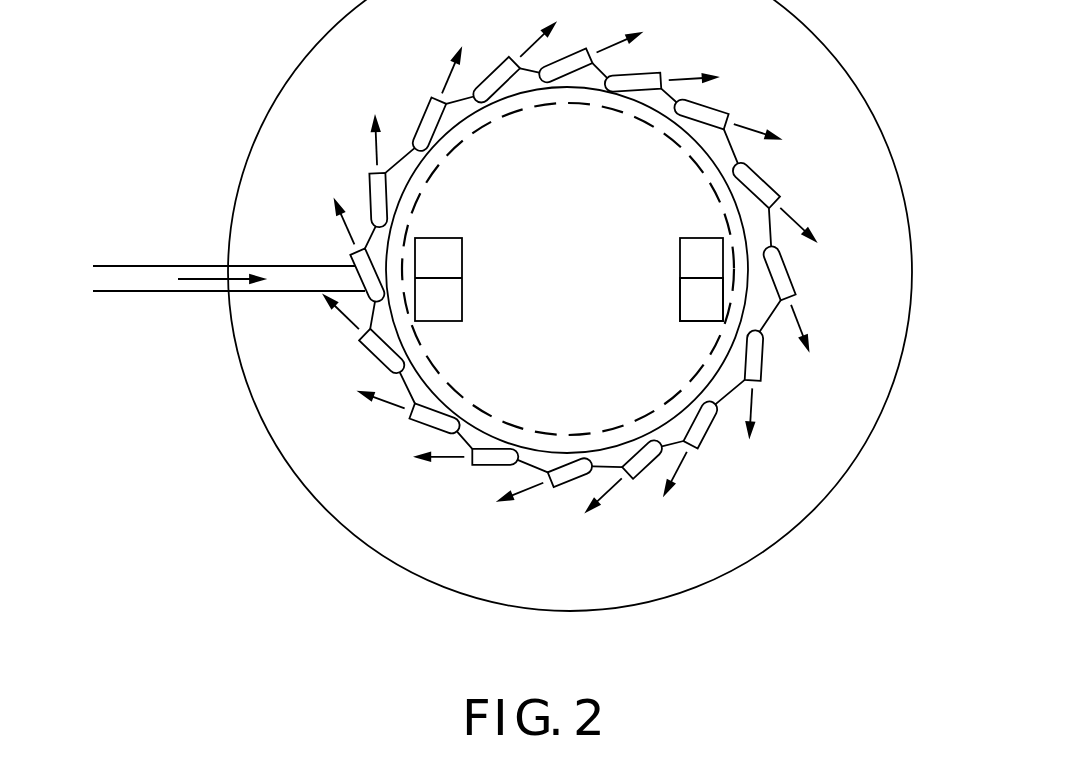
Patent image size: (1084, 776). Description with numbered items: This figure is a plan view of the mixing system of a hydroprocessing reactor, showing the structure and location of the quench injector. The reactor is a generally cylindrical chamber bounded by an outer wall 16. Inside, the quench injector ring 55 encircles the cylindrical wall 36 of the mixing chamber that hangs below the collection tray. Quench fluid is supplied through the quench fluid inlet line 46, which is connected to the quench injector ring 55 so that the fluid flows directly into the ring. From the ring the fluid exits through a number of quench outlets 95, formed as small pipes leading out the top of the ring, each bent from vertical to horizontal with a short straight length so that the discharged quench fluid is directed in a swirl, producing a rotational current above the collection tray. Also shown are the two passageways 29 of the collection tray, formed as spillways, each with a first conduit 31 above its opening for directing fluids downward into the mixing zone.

The outer wall 16 is at (260, 425).
The passageways 29 is at (450, 238).
The first conduit 31 is at (703, 299).
The cylindrical wall 36 is at (632, 422).
The quench fluid inlet line 46 is at (133, 277).
The quench injector ring 55 is at (455, 438).
The quench outlets 95 is at (648, 76).